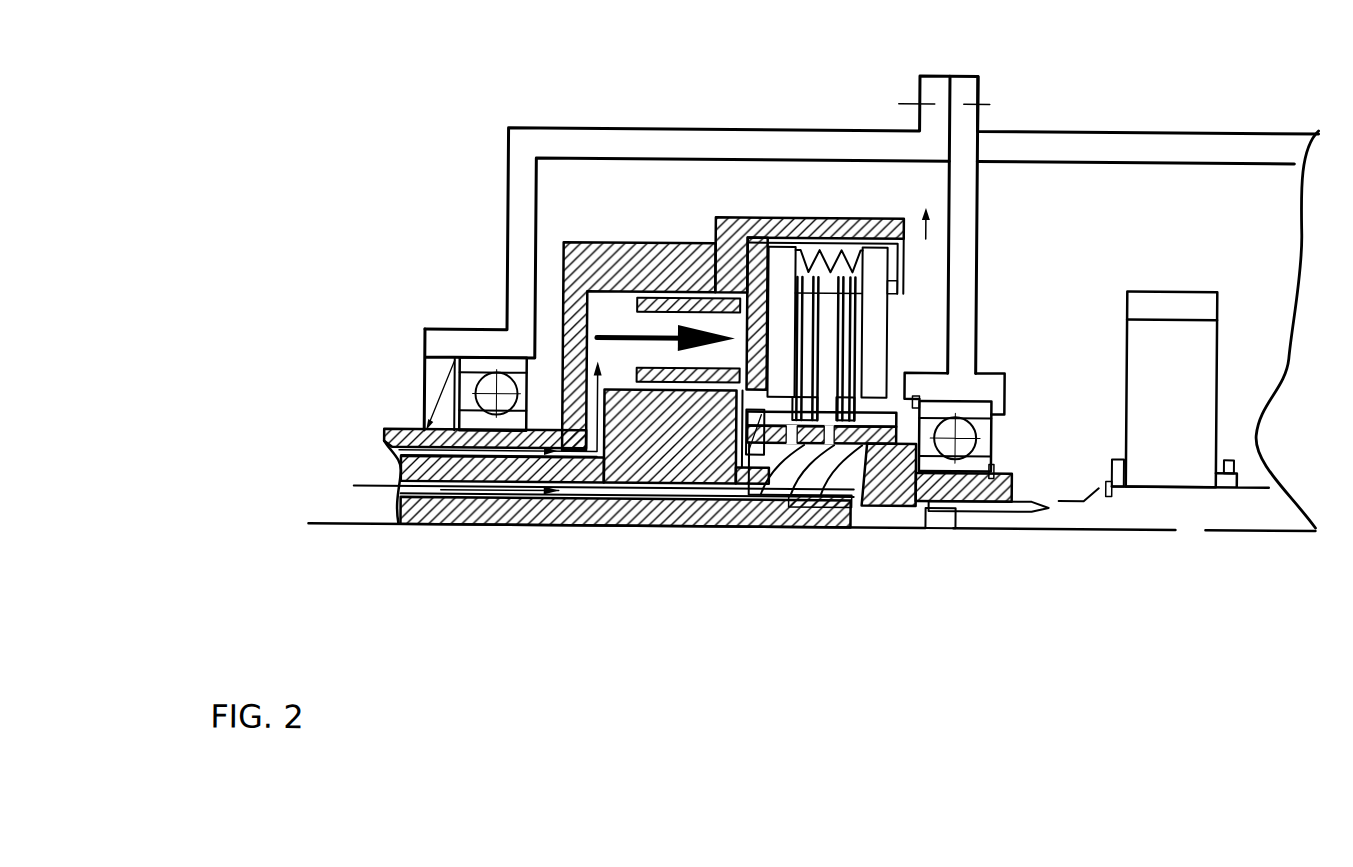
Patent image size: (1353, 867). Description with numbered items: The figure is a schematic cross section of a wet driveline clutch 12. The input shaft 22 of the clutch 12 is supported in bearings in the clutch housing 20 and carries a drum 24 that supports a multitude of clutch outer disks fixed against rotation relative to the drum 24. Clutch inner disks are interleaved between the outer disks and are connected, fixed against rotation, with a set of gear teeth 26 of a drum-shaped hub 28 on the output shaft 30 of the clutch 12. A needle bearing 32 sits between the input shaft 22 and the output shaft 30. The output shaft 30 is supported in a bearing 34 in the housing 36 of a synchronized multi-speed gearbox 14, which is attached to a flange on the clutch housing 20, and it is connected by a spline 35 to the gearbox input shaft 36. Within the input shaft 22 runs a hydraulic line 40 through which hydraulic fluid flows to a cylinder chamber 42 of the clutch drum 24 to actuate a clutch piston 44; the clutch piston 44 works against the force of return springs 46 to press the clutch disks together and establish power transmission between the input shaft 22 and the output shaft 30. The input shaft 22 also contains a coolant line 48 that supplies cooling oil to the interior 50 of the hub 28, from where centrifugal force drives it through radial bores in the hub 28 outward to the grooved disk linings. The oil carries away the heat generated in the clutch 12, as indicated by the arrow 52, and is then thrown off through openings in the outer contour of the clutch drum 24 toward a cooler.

The driveline clutch 12 is at (458, 200).
The synchronized multi-speed gearbox 14 is at (1217, 111).
The clutch housing 20 is at (559, 132).
The input shaft 22 is at (487, 515).
The drum 24 is at (775, 216).
The gear teeth 26 is at (737, 488).
The drum-shaped hub 28 is at (862, 447).
The output shaft 30 is at (947, 500).
The needle bearing 32 is at (815, 507).
The bearing 34 is at (971, 497).
The spline 35 is at (1033, 510).
The gearbox housing 36 is at (1117, 505).
The hydraulic line 40 is at (455, 452).
The cylinder chamber 42 is at (652, 325).
The clutch piston 44 is at (727, 290).
The return springs 46 is at (838, 262).
The coolant line 48 is at (520, 500).
The interior of the hub 50 is at (845, 480).
The arrow 52 is at (925, 238).